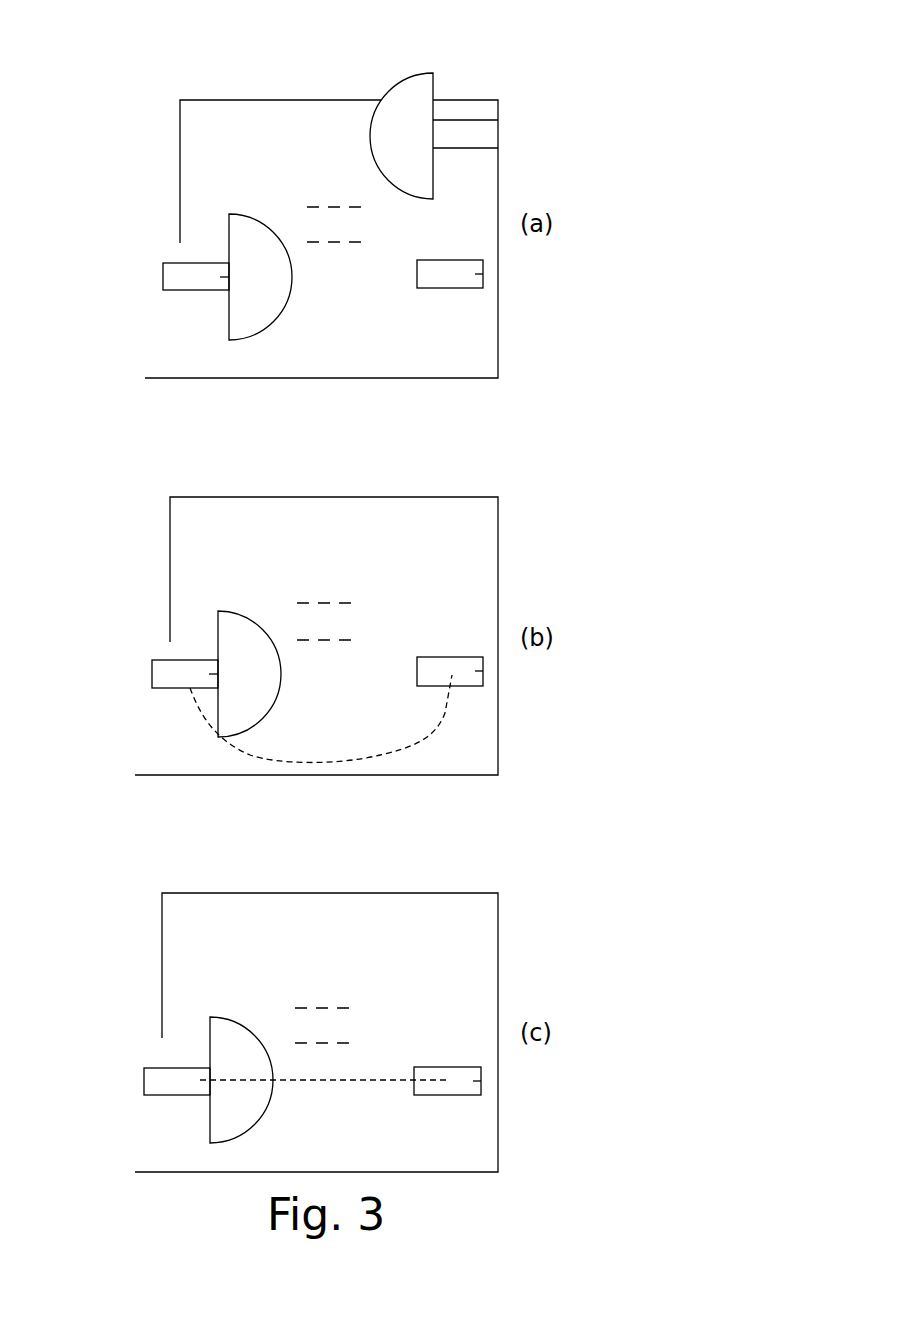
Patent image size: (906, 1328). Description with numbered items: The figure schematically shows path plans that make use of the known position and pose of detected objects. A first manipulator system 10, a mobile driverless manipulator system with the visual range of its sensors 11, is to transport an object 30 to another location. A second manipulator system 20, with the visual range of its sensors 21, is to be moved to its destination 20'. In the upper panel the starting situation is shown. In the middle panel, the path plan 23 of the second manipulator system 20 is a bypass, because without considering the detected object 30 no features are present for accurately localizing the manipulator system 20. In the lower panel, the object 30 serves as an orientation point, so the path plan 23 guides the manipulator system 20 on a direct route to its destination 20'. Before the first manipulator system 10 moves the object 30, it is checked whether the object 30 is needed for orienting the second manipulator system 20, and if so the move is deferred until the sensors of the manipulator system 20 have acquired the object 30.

The first manipulator system 10 is at (472, 112).
The visual range of the sensors 11 is at (407, 97).
The second manipulator system 20 is at (131, 662).
The visual range of the sensors 21 is at (241, 317).
The destination of the manipulator system 20' is at (501, 689).
The object 30 is at (327, 207).
The path plan 23 is at (447, 714).